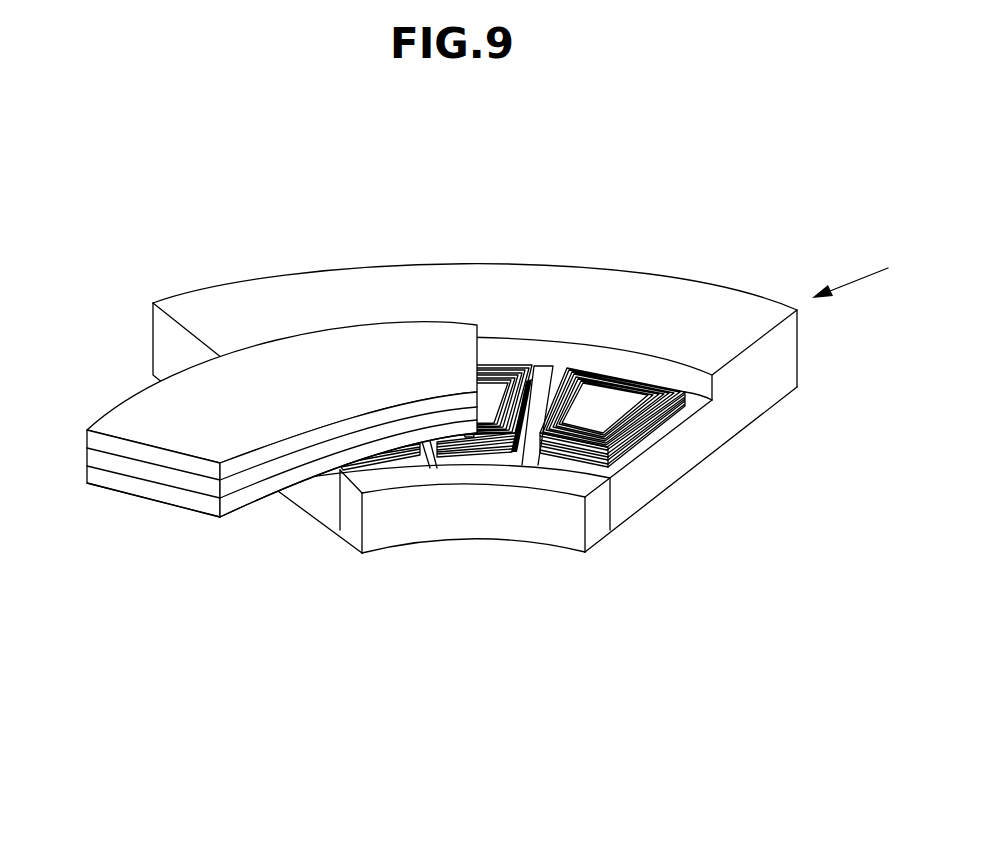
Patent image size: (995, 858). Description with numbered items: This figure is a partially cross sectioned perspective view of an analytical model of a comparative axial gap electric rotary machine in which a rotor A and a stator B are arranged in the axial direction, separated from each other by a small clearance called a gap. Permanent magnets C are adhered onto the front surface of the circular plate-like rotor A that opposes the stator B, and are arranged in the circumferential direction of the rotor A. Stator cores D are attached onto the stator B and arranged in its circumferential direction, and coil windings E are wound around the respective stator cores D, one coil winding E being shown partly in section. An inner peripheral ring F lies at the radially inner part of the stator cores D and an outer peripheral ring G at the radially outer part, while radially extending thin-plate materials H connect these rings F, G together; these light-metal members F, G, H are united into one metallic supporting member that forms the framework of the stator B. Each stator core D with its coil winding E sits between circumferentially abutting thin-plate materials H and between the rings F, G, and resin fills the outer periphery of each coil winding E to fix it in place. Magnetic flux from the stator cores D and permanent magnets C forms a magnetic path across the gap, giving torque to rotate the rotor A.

The rotor A is at (245, 453).
The stator B is at (488, 407).
The permanent magnet C is at (147, 503).
The stator core D is at (603, 408).
The coil winding E is at (570, 453).
The inner peripheral ring F is at (598, 543).
The outer peripheral ring G is at (762, 422).
The thin-plate material H is at (672, 493).